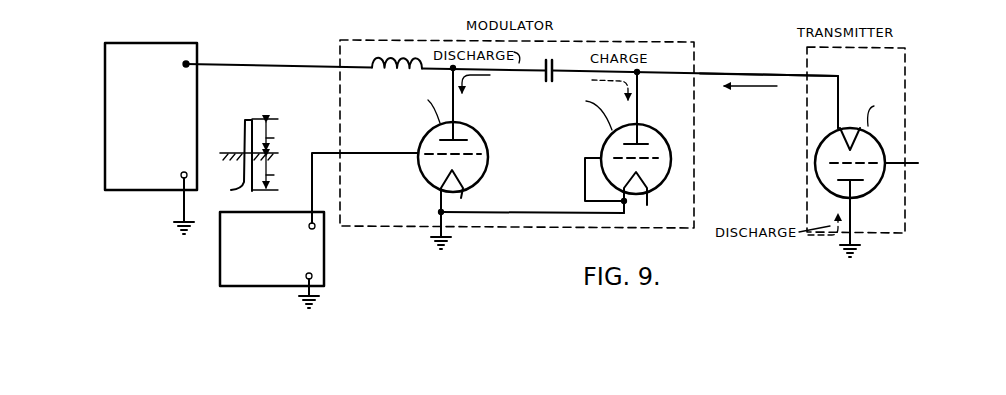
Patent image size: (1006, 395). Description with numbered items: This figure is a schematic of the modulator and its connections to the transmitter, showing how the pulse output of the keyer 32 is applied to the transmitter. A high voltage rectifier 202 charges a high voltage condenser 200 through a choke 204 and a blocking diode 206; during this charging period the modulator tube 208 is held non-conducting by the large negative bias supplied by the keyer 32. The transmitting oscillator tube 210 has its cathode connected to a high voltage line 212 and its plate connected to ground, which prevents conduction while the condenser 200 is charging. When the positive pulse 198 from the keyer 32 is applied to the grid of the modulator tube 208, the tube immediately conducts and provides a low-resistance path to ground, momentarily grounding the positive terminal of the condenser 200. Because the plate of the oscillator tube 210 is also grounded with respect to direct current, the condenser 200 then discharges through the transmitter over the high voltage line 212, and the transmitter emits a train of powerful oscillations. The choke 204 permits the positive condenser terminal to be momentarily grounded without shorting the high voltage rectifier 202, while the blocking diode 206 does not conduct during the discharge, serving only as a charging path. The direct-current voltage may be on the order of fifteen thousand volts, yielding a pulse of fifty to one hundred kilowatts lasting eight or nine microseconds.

The high voltage rectifier 202 is at (163, 43).
The positive pulse 198 is at (246, 123).
The keyer 32 is at (220, 258).
The choke 204 is at (389, 59).
The high voltage condenser 200 is at (547, 58).
The modulator tube 208 is at (424, 180).
The blocking diode 206 is at (650, 124).
The high voltage line 212 is at (828, 72).
The transmitting oscillator tube 210 is at (884, 151).